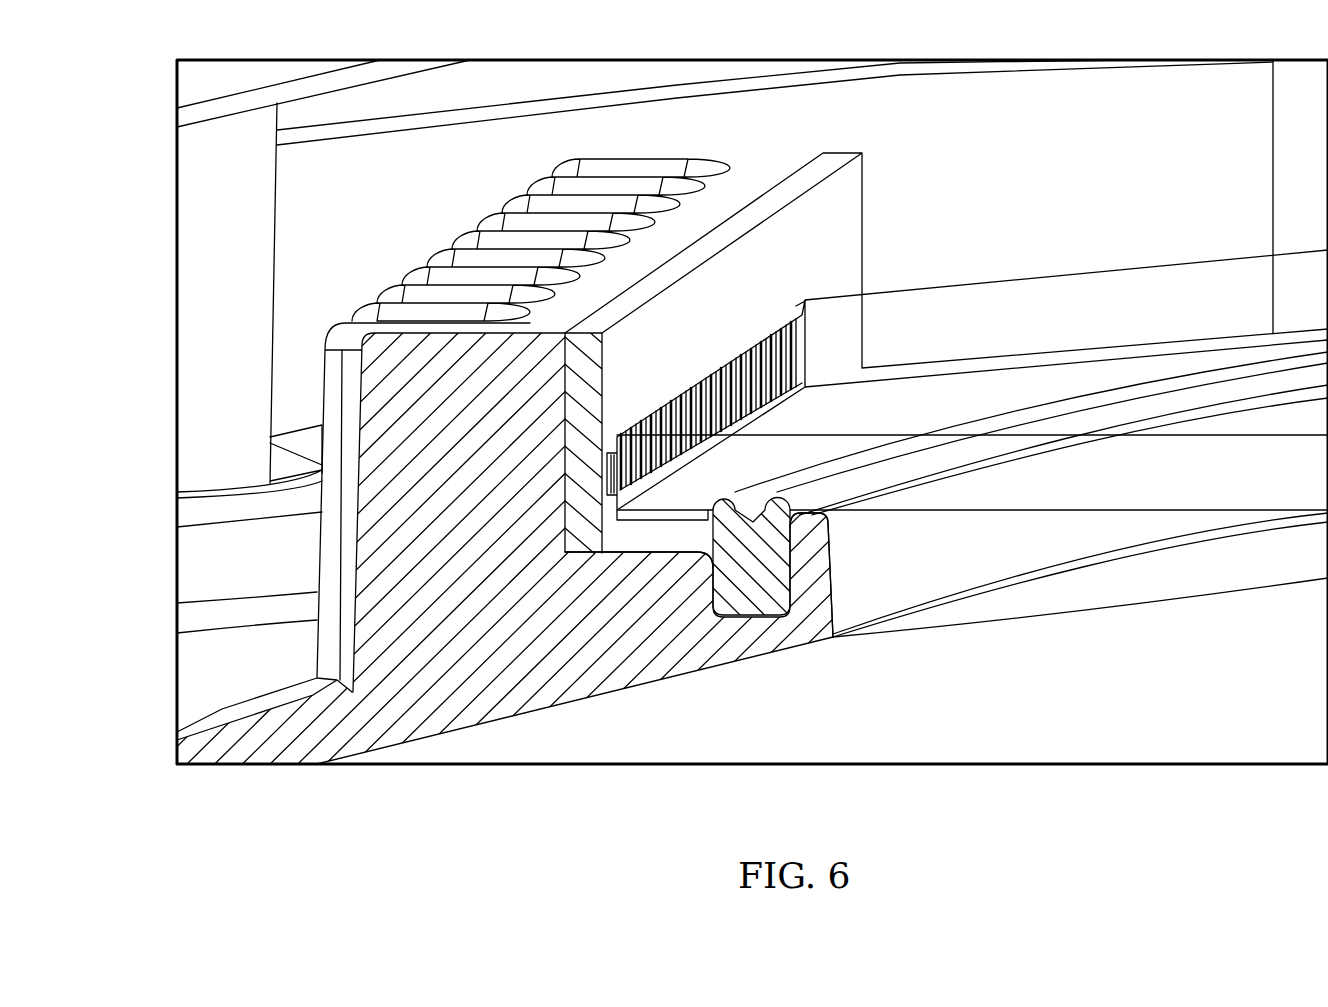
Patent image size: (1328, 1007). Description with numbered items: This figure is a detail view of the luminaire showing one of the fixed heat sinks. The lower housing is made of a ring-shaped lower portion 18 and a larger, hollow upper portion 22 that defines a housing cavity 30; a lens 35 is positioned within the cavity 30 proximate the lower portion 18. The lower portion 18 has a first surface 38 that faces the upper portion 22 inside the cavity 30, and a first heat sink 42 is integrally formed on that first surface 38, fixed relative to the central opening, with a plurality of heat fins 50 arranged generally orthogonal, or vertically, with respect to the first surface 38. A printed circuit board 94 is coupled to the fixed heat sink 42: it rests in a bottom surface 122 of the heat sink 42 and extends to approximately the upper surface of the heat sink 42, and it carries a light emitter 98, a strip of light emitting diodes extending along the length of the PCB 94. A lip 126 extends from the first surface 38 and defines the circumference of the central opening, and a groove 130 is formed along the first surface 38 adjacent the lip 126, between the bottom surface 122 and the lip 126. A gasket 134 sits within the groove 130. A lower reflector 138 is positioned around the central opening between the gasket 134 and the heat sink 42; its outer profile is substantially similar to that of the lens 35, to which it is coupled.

The lower portion 18 is at (400, 755).
The upper portion 22 is at (202, 88).
The housing cavity 30 is at (1104, 88).
The lens 35 is at (1270, 482).
The first surface 38 is at (208, 686).
The first heat sink 42 is at (538, 680).
The heat fins 50 is at (427, 297).
The printed circuit board 94 is at (825, 204).
The light emitter 98 is at (715, 382).
The bottom surface 122 is at (625, 550).
The lip 126 is at (908, 558).
The groove 130 is at (737, 632).
The gasket 134 is at (763, 545).
The lower reflector 138 is at (682, 478).